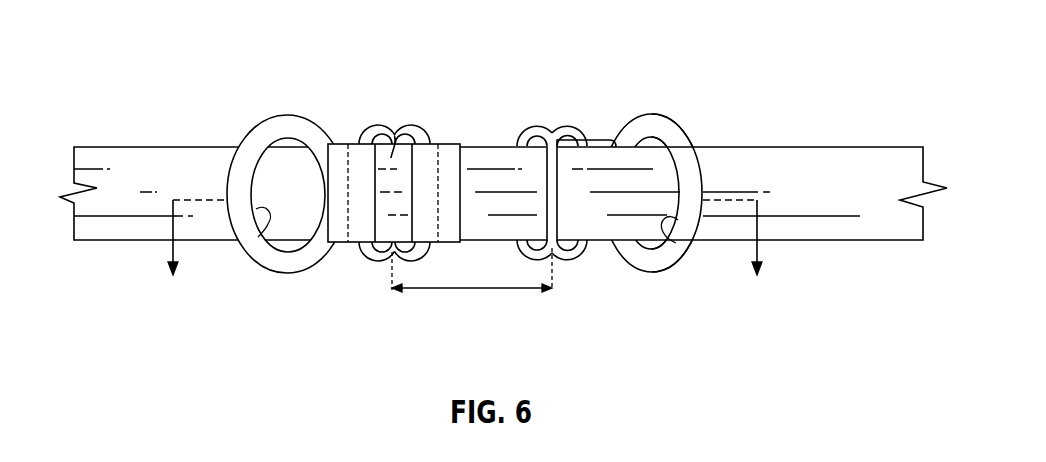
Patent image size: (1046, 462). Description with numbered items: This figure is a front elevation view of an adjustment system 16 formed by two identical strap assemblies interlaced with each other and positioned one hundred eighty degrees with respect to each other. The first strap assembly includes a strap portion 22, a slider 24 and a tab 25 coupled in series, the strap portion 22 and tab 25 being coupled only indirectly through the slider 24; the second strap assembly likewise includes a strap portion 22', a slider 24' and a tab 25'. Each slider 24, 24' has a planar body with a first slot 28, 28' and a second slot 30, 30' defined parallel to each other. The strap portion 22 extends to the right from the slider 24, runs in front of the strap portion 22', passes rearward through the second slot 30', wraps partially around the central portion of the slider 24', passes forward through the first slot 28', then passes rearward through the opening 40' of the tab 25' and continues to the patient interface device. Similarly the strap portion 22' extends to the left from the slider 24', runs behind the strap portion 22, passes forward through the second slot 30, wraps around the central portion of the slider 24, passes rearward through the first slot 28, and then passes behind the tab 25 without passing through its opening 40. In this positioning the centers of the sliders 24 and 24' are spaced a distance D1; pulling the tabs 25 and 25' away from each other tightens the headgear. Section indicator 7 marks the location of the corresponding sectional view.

The adjustment system 16 is at (503, 182).
The strap portion 22 is at (752, 167).
The strap portion 22' is at (303, 170).
The slider 24 is at (394, 150).
The slider 24' is at (562, 167).
The tab 25 is at (287, 223).
The tab 25' is at (652, 168).
The first slot 28 is at (369, 282).
The first slot 28' is at (592, 108).
The second slot 30 is at (434, 262).
The second slot 30' is at (527, 164).
The opening 40 is at (236, 283).
The opening 40' is at (687, 271).
The distance D1 is at (477, 290).
The section view indicator 7 is at (465, 256).